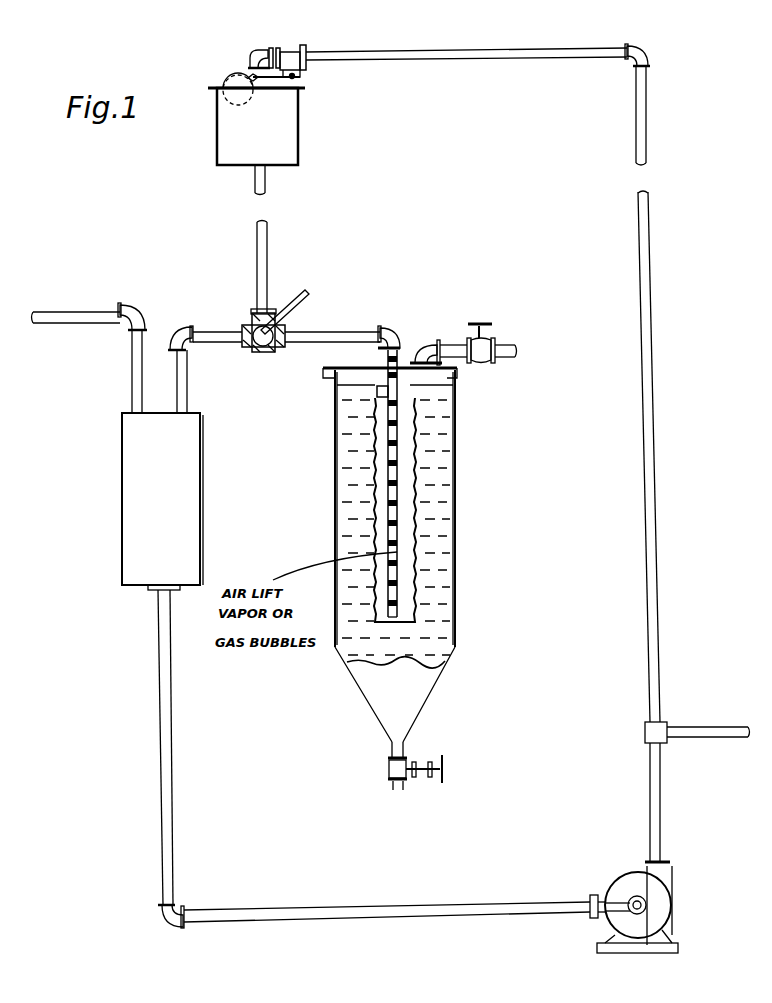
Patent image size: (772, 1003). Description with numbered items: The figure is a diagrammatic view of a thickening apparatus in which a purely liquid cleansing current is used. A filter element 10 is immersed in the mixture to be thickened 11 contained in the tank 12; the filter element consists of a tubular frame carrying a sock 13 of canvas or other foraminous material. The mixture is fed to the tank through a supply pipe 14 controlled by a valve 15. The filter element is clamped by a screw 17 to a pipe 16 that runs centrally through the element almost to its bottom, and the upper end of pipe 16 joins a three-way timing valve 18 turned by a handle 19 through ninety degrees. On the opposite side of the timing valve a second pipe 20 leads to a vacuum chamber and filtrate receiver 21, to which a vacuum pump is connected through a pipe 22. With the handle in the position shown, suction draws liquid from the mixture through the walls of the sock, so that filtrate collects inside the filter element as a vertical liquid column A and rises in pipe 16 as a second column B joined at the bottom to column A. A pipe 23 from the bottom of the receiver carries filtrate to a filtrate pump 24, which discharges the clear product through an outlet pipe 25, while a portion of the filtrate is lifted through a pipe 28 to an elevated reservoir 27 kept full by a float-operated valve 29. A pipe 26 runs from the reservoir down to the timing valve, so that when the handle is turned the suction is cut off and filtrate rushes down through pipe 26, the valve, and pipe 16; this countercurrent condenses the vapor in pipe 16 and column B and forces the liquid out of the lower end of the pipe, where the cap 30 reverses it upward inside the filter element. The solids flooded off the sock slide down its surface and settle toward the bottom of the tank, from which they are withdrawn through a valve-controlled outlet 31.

The filter element 10 is at (417, 400).
The mixture to be thickened 11 is at (438, 518).
The tank 12 is at (458, 578).
The sock 13 is at (375, 463).
The supply pipe 14 is at (447, 350).
The valve 15 is at (492, 323).
The pipe 16 is at (380, 353).
The screw 17 is at (377, 392).
The three-way timing valve 18 is at (253, 325).
The handle 19 is at (309, 294).
The second pipe 20 is at (203, 338).
The vacuum chamber and filtrate receiver 21 is at (137, 485).
The pipe 22 is at (82, 323).
The pipe 23 is at (165, 705).
The filtrate pump 24 is at (625, 883).
The outlet pipe 25 is at (715, 736).
The pipe 26 is at (268, 235).
The reservoir 27 is at (288, 122).
The pipe 28 is at (645, 291).
The float-operated valve 29 is at (287, 50).
The cap 30 is at (403, 620).
The valve-controlled outlet 31 is at (390, 767).
The filtrate column A is at (413, 438).
The second column B is at (398, 540).